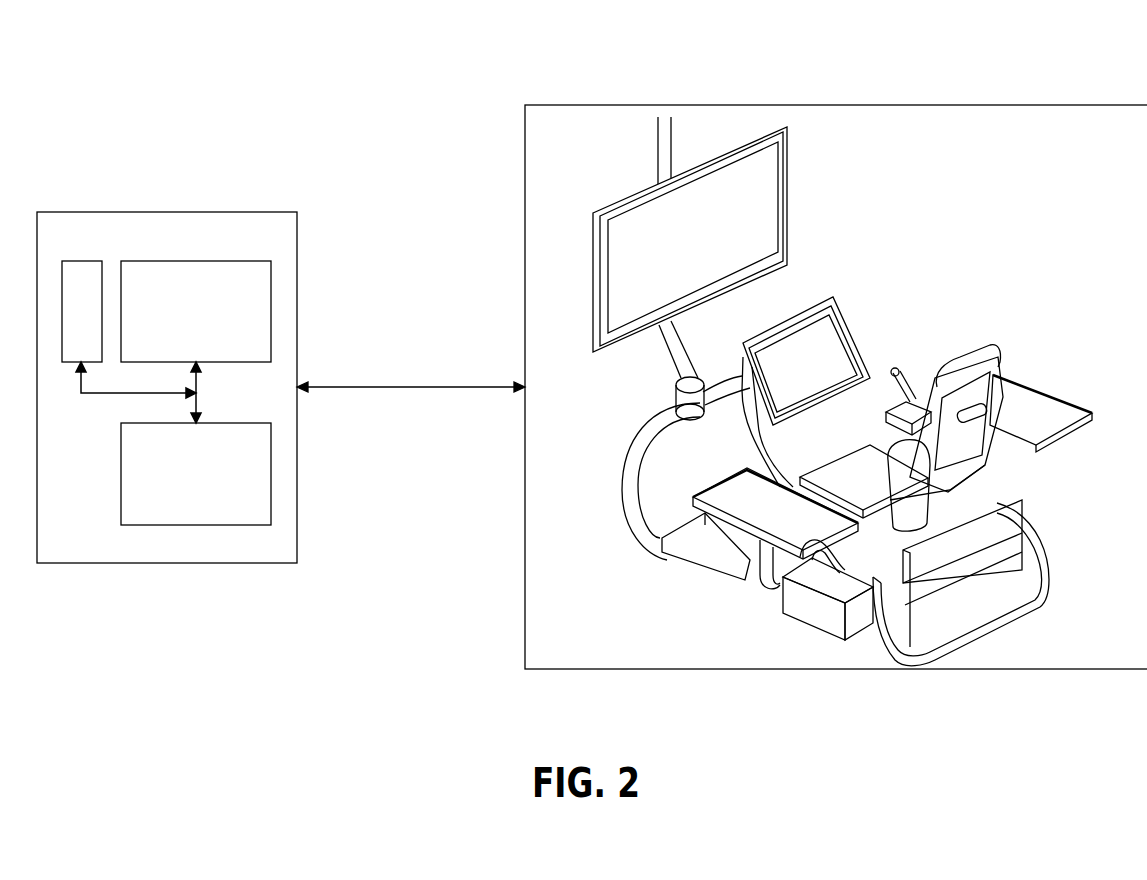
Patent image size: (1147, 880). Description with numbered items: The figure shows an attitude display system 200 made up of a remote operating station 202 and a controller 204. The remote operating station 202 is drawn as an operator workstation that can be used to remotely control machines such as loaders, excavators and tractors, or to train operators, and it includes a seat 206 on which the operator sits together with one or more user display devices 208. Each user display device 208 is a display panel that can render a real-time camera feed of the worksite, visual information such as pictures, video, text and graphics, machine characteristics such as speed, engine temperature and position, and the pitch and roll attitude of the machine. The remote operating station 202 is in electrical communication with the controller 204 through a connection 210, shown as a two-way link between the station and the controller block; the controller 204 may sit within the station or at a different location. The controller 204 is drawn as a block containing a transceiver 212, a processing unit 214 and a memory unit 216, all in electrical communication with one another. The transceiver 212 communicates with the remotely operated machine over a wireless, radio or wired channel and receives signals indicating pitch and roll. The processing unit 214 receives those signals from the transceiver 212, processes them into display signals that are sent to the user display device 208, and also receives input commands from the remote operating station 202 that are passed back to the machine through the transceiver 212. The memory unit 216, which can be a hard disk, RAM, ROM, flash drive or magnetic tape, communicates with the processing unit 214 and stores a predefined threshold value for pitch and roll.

The attitude display system 200 is at (1122, 58).
The remote operating station 202 is at (525, 166).
The controller 204 is at (297, 238).
The seat 206 is at (983, 348).
The user display device 208 is at (733, 212).
The connection 210 is at (357, 390).
The transceiver 212 is at (196, 474).
The processing unit 214 is at (196, 311).
The memory unit 216 is at (100, 250).